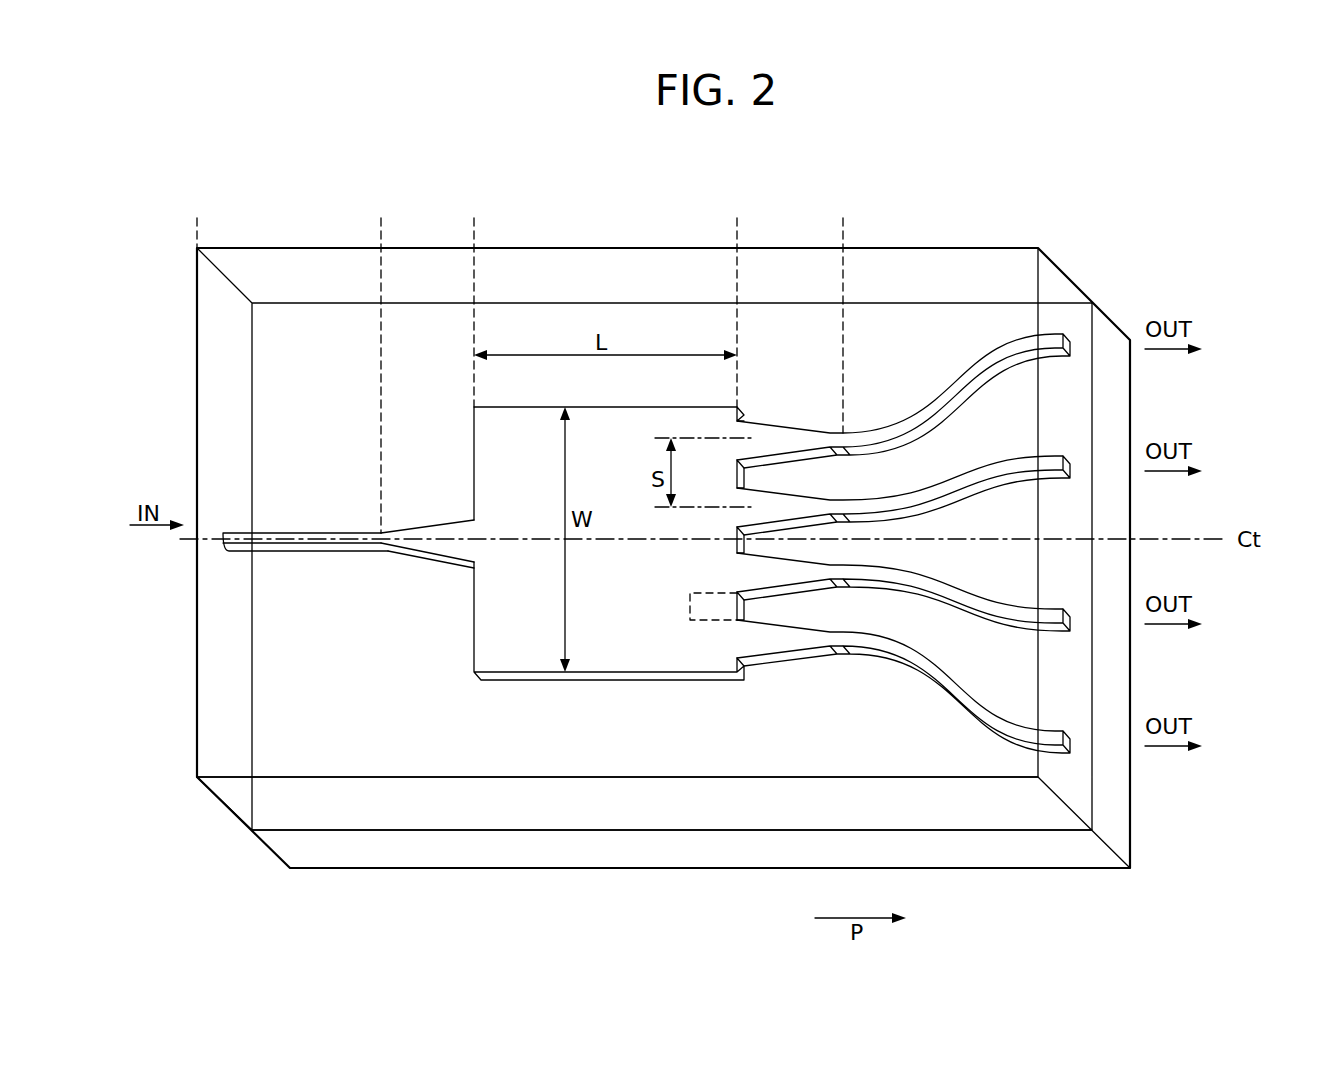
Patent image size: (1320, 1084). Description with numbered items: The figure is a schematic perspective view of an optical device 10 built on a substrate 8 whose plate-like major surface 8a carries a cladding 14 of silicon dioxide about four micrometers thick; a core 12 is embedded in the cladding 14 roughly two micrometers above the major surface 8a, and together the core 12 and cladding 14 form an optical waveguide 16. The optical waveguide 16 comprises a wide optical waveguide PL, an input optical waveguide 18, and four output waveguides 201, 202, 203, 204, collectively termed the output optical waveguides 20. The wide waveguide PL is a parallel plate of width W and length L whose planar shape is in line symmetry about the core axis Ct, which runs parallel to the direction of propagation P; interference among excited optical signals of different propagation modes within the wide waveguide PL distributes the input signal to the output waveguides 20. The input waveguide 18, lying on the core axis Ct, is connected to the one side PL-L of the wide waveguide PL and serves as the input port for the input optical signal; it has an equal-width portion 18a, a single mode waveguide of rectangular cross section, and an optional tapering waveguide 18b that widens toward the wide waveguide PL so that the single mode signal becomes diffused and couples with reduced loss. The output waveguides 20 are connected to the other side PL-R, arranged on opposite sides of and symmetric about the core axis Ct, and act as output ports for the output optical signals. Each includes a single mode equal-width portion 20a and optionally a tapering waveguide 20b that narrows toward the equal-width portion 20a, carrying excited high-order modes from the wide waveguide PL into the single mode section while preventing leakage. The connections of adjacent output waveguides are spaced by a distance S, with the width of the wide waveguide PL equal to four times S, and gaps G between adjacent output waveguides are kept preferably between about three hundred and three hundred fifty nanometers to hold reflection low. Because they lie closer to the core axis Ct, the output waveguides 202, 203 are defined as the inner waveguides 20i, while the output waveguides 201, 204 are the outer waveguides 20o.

The substrate 8 is at (1090, 848).
The major surface 8a is at (960, 822).
The optical device 10 is at (882, 150).
The core 12 is at (612, 640).
The cladding 14 is at (537, 805).
The optical waveguide 16 is at (523, 914).
The input optical waveguide 18 is at (455, 190).
The equal-width portion 18a is at (197, 231).
The tapering waveguide 18b is at (474, 231).
The output optical waveguides 20 is at (968, 190).
The equal-width portion 20a is at (1073, 231).
The tapering waveguide 20b is at (737, 231).
The first output waveguide 201 is at (1070, 345).
The second output waveguide 202 is at (1070, 467).
The third output waveguide 203 is at (1070, 620).
The fourth output waveguide 204 is at (1070, 742).
The outer waveguides 20o is at (994, 568).
The inner waveguides 20i is at (990, 568).
The gap G is at (690, 596).
The wide optical waveguide PL is at (737, 190).
The one side of the wide waveguide PL-L is at (462, 611).
The other side of the wide waveguide PL-R is at (754, 609).